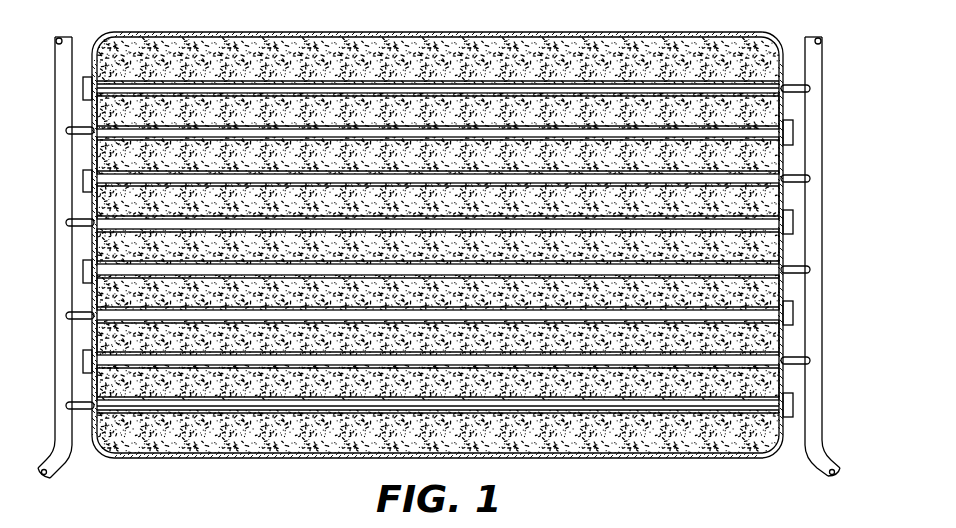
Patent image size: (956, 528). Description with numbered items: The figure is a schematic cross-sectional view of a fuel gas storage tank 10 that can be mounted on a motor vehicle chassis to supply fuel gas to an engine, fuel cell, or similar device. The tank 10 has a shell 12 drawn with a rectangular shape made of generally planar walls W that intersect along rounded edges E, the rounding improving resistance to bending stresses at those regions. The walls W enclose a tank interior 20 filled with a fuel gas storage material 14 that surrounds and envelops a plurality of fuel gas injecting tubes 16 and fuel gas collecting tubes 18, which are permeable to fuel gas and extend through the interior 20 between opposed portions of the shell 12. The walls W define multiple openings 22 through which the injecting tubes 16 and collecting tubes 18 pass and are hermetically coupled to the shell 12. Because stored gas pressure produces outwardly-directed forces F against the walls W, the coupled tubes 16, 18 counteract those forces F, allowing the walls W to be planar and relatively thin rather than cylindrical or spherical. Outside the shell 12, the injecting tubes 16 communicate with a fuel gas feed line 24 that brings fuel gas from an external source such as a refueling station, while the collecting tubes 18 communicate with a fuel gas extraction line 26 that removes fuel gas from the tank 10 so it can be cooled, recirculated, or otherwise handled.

The fuel gas storage tank 10 is at (440, 264).
The shell 12 is at (332, 463).
The fuel gas storage material 14 is at (453, 124).
The fuel gas injecting tube 16 is at (152, 124).
The fuel gas collecting tube 18 is at (655, 77).
The tank interior 20 is at (652, 456).
The openings 22 is at (106, 90).
The fuel gas feed line 24 is at (59, 351).
The fuel gas extraction line 26 is at (817, 313).
The edges E is at (104, 38).
The walls W is at (575, 33).
The forces F is at (437, 50).